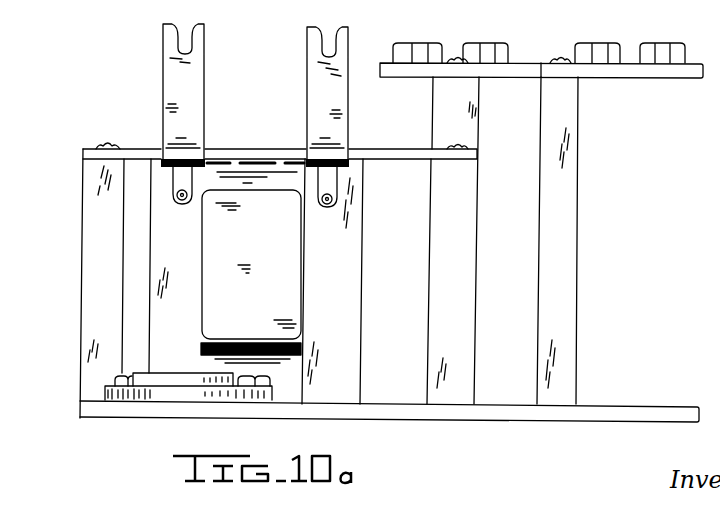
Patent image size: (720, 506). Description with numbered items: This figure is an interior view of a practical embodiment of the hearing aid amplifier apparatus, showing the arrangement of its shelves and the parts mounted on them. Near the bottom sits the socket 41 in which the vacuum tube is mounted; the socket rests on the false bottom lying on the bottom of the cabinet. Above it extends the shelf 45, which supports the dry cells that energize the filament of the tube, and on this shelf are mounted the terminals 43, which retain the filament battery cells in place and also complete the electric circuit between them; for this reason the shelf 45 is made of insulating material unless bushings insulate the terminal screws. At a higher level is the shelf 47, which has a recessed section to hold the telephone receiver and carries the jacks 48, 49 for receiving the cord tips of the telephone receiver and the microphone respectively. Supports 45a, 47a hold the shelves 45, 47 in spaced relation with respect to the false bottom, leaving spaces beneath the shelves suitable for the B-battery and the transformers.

The socket 41 is at (197, 392).
The terminals 43 is at (307, 66).
The shelf 45 is at (127, 147).
The support 45a is at (78, 305).
The shelf 47 is at (647, 82).
The support 47a is at (536, 153).
The jack 48 is at (487, 44).
The jack 49 is at (655, 44).